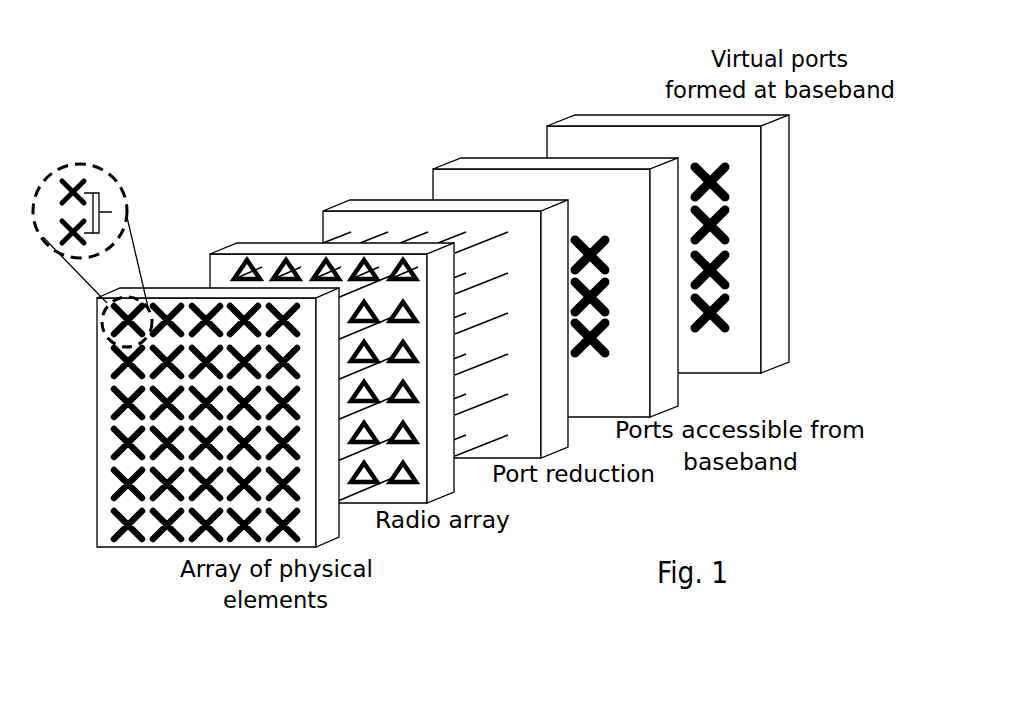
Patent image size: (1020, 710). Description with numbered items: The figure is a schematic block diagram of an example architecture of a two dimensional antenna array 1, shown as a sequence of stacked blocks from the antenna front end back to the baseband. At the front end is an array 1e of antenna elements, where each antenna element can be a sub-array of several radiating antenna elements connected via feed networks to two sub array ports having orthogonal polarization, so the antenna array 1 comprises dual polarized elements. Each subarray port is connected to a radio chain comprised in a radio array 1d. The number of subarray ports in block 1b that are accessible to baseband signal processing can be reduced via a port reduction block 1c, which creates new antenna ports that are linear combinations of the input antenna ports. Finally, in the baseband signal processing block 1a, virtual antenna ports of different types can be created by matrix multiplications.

The antenna array 1 is at (138, 77).
The baseband signal processing block 1a is at (662, 120).
The block of subarray ports accessible to baseband signal processing 1b is at (478, 168).
The port reduction block 1c is at (378, 207).
The radio array 1d is at (288, 250).
The array of antenna elements 1e is at (203, 297).